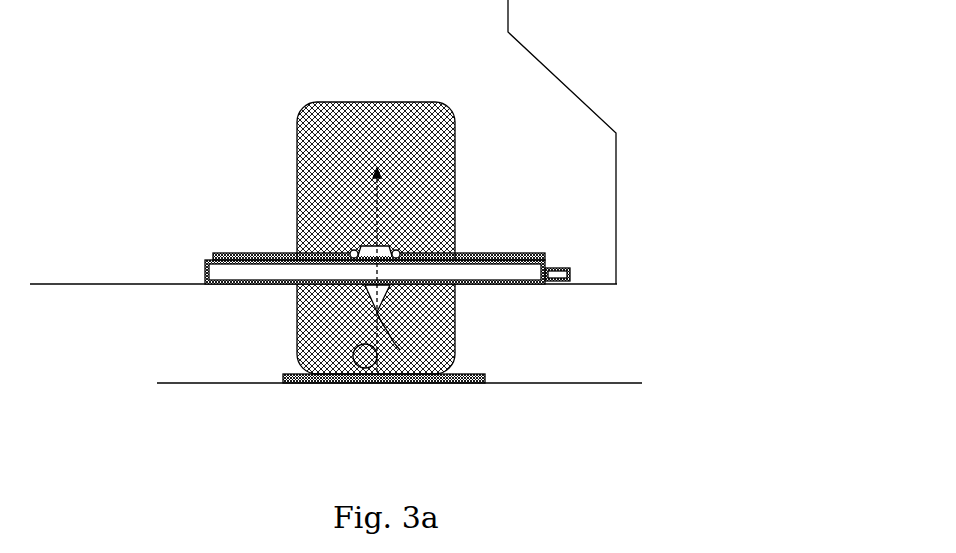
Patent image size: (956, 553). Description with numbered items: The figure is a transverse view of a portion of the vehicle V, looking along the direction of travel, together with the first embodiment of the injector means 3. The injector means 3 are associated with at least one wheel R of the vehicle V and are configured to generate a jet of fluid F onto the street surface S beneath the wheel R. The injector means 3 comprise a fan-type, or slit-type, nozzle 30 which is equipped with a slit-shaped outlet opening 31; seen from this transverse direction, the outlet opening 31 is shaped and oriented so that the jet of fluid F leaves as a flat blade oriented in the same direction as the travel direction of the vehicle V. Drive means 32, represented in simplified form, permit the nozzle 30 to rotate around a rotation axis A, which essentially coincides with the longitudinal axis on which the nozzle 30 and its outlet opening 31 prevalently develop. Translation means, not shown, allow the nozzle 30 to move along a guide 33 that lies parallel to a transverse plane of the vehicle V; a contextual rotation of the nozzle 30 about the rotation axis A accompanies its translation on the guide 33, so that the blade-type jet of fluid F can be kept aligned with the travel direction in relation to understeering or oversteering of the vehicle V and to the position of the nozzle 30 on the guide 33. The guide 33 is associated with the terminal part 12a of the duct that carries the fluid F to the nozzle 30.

The injector means 3 is at (332, 280).
The fan-type nozzle 30 is at (416, 378).
The slit-shaped outlet opening 31 is at (390, 378).
The drive means 32 is at (355, 247).
The guide 33 is at (220, 252).
The terminal part of the duct 12a is at (547, 288).
The vehicle V is at (580, 100).
The street surface S is at (585, 385).
The wheel R is at (460, 380).
The fluid F is at (358, 378).
The rotation axis A is at (377, 262).